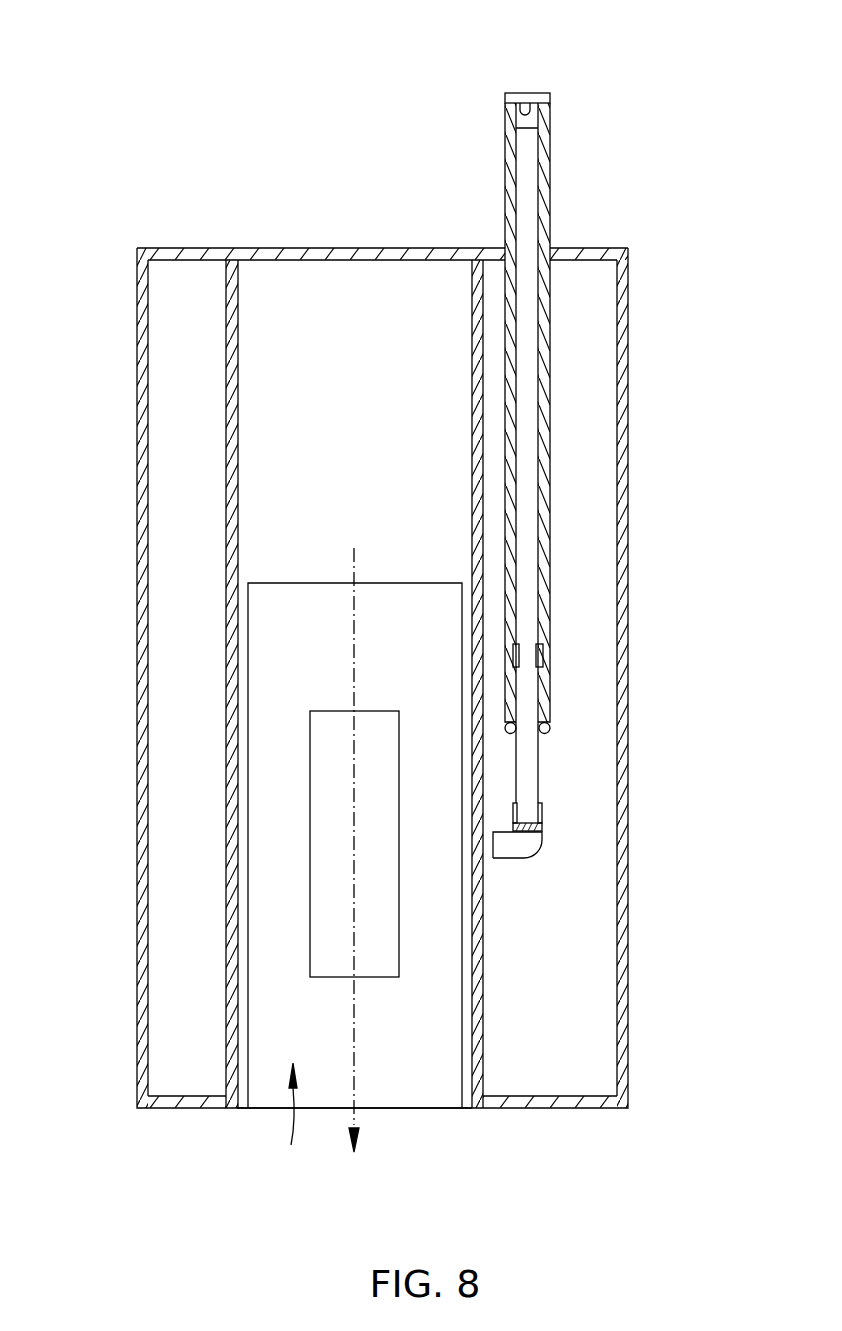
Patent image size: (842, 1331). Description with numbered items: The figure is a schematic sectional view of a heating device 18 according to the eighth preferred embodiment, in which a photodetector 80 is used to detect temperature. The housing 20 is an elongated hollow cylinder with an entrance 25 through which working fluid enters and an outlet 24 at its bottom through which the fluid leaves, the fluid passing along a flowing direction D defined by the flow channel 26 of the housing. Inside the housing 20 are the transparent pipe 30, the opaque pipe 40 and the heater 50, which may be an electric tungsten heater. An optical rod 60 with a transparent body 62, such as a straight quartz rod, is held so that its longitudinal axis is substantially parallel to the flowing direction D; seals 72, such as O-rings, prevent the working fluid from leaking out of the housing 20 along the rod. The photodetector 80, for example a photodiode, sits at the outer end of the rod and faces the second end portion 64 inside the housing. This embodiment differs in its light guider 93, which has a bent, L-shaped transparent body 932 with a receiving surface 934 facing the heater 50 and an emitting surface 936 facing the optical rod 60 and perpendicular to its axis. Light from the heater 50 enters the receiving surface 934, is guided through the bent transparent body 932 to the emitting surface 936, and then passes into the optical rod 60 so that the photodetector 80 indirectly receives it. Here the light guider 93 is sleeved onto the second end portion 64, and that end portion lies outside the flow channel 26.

The heating device 18 is at (703, 100).
The housing 20 is at (623, 326).
The outlet 24 is at (403, 1108).
The entrance 25 is at (351, 247).
The flow channel 26 is at (291, 1122).
The transparent pipe 30 is at (243, 672).
The opaque pipe 40 is at (230, 462).
The heater 50 is at (327, 808).
The optical rod 60 is at (616, 453).
The transparent body 62 is at (528, 557).
The second end portion 64 is at (540, 763).
The seals 72 is at (547, 653).
The photodetector 80 is at (524, 105).
The light guider 93 is at (613, 870).
The bent transparent body 932 is at (512, 847).
The receiving surface 934 is at (495, 847).
The emitting surface 936 is at (527, 822).
The flowing direction D is at (355, 868).